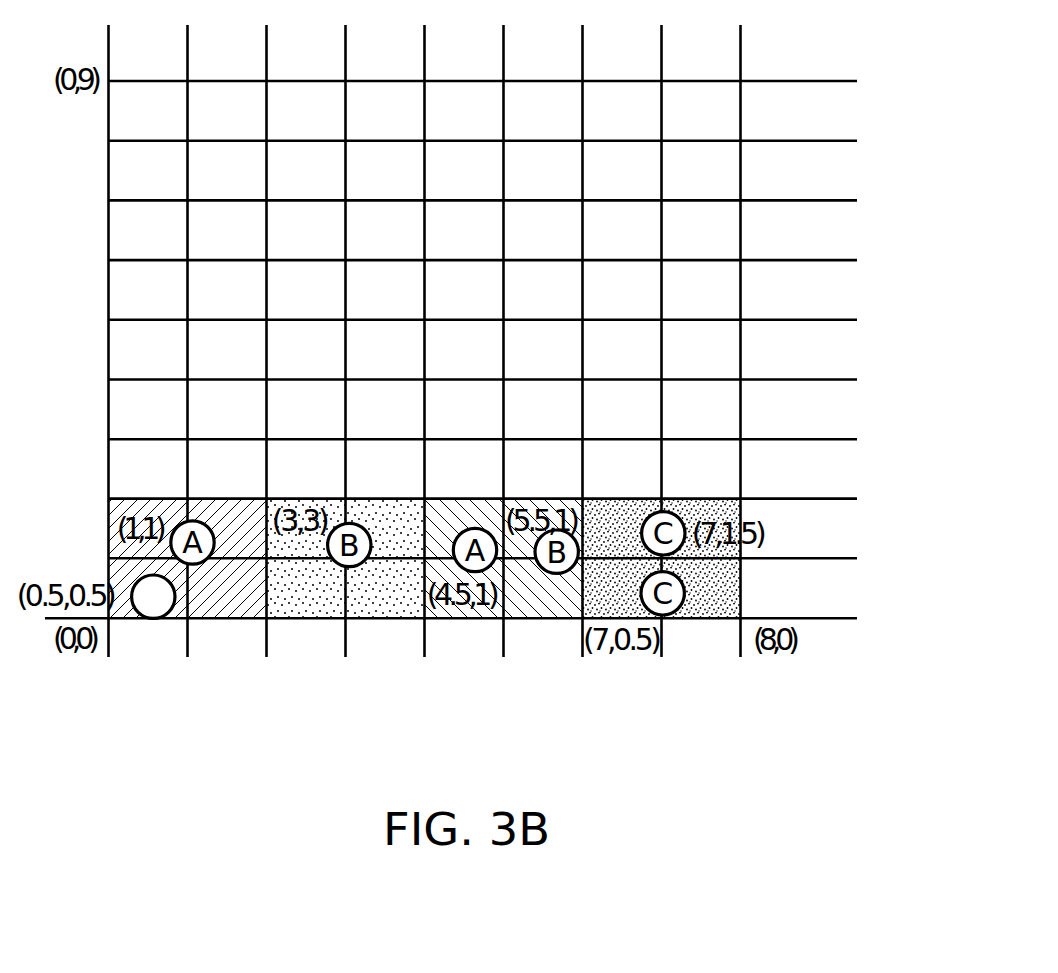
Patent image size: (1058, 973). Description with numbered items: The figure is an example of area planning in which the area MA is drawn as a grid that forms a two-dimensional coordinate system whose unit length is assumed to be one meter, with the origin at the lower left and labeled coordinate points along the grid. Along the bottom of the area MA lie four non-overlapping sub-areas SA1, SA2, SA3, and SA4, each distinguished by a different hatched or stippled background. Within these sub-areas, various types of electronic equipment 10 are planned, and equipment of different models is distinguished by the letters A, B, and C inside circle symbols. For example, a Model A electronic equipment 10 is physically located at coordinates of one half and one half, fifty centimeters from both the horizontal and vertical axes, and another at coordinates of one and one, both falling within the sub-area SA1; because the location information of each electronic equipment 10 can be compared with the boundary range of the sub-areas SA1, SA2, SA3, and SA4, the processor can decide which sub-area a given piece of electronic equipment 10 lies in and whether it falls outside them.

The area MA is at (872, 226).
The sub-area SA1 is at (228, 590).
The sub-area SA2 is at (386, 590).
The sub-area SA3 is at (543, 590).
The sub-area SA4 is at (702, 589).
The electronic equipment 10 is at (146, 619).